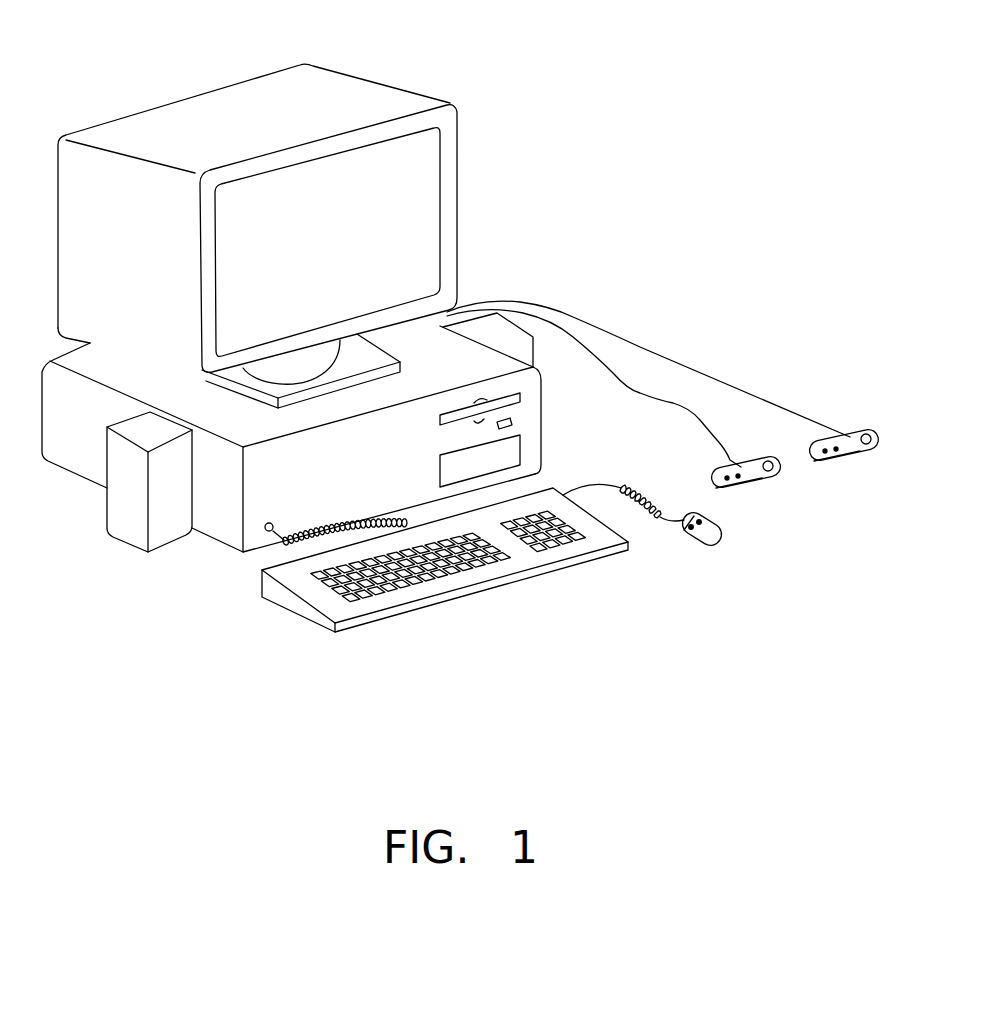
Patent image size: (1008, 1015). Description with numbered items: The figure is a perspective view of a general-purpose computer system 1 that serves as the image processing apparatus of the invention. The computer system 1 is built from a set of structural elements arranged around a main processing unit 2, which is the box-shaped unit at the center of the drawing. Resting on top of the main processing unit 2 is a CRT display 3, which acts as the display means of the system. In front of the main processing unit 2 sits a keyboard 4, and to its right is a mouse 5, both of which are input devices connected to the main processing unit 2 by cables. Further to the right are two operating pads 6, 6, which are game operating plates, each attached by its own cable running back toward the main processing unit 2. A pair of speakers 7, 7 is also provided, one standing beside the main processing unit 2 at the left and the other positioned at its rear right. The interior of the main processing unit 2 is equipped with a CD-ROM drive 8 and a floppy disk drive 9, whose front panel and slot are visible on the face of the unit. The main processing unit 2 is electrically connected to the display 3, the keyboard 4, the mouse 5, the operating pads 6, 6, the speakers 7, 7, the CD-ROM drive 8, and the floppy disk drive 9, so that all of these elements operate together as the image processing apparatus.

The computer system 1 is at (236, 601).
The main processing unit 2 is at (227, 525).
The CRT display 3 is at (248, 90).
The keyboard 4 is at (490, 592).
The mouse 5 is at (710, 535).
The operating pads 6 is at (752, 483).
The speakers 7 is at (130, 523).
The CD-ROM drive 8 is at (522, 452).
The floppy disk drive 9 is at (520, 397).